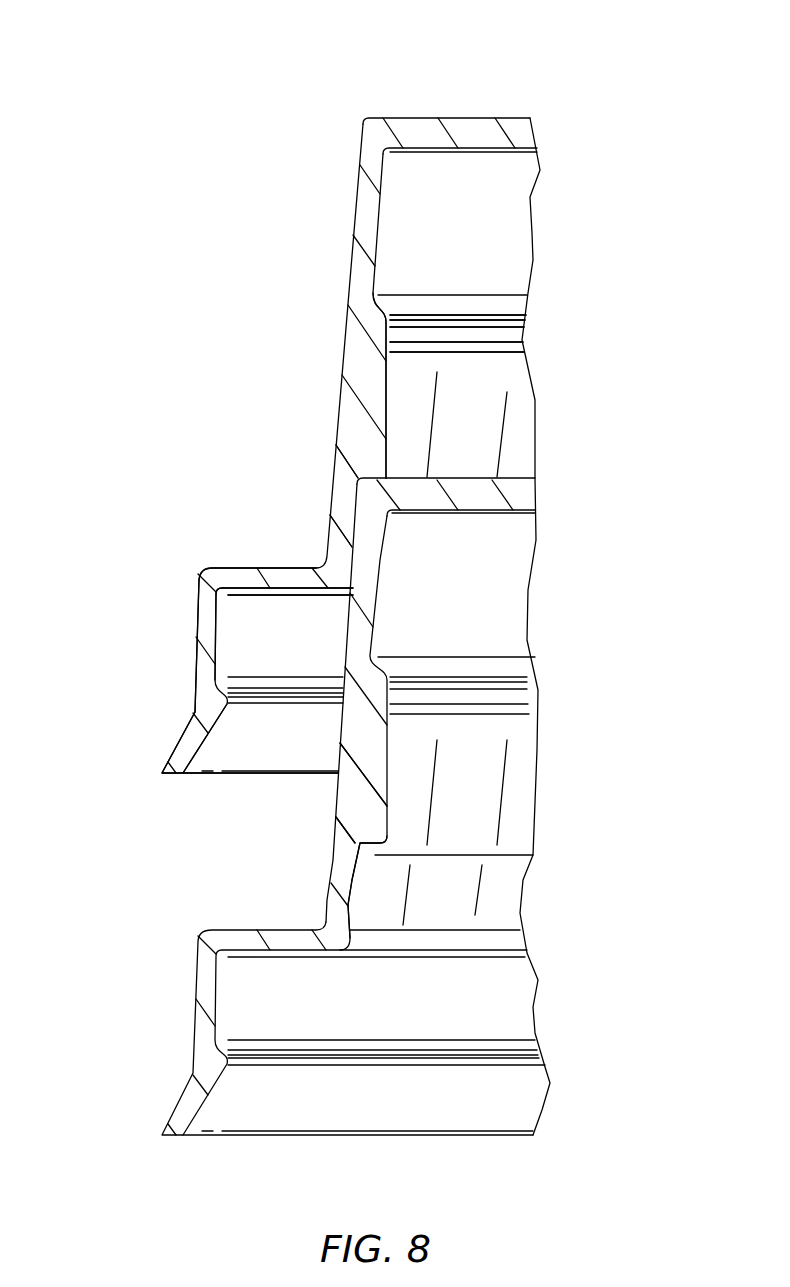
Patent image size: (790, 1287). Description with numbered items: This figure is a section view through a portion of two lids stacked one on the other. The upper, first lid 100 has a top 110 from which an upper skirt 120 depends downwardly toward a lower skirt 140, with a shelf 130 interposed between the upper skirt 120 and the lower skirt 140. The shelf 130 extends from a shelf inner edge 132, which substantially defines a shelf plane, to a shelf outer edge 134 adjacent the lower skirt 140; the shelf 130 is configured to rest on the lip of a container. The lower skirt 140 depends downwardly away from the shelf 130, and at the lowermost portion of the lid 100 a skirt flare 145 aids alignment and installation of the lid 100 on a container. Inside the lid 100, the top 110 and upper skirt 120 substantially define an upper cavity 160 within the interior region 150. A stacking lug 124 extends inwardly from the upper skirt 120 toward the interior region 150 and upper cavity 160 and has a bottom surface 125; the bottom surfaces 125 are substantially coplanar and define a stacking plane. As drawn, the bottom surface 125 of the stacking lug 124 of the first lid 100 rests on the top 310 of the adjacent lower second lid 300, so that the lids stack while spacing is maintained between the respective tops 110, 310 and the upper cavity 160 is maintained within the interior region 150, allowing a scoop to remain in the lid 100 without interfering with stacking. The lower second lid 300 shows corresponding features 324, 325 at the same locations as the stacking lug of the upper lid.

The lid 100 is at (372, 215).
The top 110 is at (470, 128).
The upper skirt 120 is at (367, 195).
The stacking lug 124 is at (350, 397).
The bottom surface of stacking lug 125 is at (390, 487).
The shelf 130 is at (268, 568).
The shelf inner edge 132 is at (203, 580).
The shelf outer edge 134 is at (347, 583).
The lower skirt 140 is at (203, 635).
The skirt flare 145 is at (183, 752).
The interior region 150 is at (497, 276).
The upper cavity 160 is at (497, 276).
The second lid 300 is at (370, 605).
The top of second lid 310 is at (512, 492).
The side wall of insert member 324 is at (375, 800).
The lower end of insert member 325 is at (365, 843).